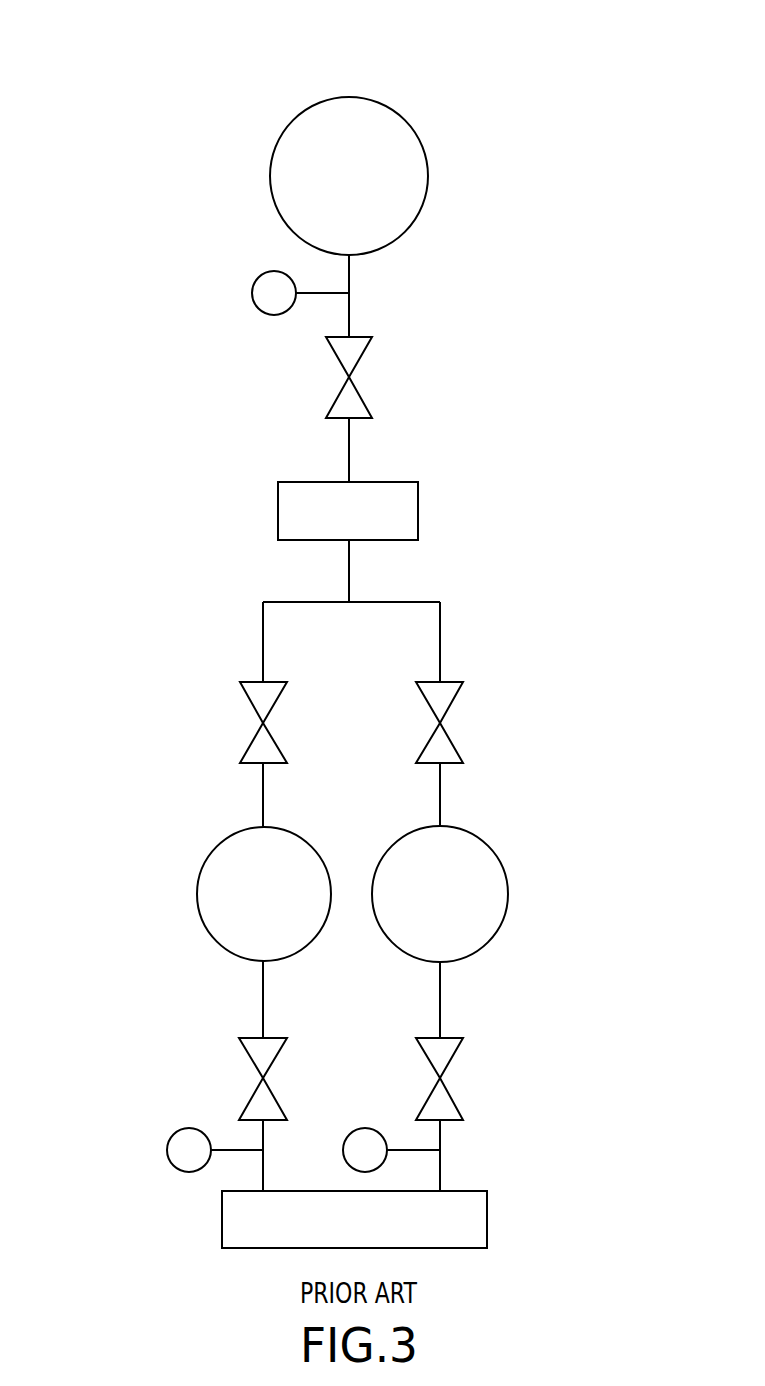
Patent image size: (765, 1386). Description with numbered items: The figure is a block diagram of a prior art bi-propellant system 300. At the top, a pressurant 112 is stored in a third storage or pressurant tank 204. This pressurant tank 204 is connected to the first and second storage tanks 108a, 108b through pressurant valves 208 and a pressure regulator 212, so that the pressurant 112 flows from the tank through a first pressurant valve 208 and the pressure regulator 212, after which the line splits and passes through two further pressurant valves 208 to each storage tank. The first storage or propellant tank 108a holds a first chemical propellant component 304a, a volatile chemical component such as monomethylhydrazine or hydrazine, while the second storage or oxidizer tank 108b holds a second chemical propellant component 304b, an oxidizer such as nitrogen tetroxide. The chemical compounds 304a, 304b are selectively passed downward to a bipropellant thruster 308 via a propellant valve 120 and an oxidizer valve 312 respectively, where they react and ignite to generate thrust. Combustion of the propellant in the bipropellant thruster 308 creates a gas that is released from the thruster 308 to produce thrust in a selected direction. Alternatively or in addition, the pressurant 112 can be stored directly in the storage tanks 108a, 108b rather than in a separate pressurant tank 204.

The bi-propellant system 300 is at (253, 92).
The pressurant 112 is at (403, 140).
The pressurant tank 204 is at (408, 234).
The pressurant valves 208 is at (362, 358).
The pressure regulator 212 is at (278, 502).
The first storage tank 108a is at (243, 848).
The first chemical propellant component 304a is at (212, 920).
The second storage tank 108b is at (493, 858).
The second chemical propellant component 304b is at (486, 930).
The propellant valve 120 is at (256, 1058).
The oxidizer valve 312 is at (458, 1045).
The bipropellant thruster 308 is at (487, 1216).